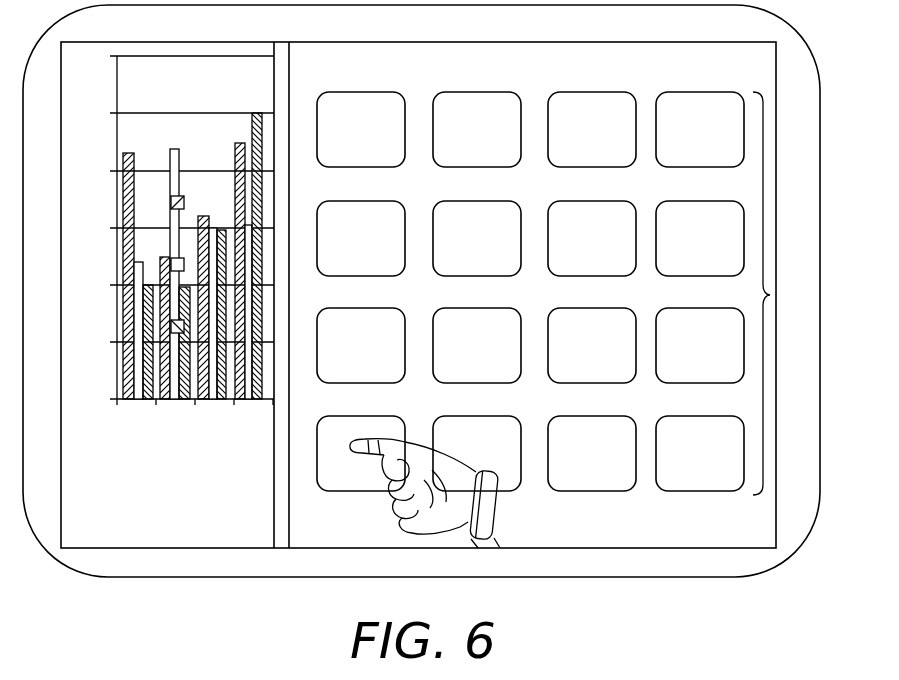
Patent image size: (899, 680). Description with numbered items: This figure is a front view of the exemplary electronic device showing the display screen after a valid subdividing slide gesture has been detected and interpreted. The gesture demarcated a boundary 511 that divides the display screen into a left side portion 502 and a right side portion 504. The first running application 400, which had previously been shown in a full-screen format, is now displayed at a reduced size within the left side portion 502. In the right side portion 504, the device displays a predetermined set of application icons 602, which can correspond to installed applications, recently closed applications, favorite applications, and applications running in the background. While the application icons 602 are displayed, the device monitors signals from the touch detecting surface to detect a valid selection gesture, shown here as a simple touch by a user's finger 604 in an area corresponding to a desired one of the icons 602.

The first running application 400 is at (693, 42).
The left side portion 502 is at (190, 539).
The right side portion 504 is at (326, 539).
The boundary 511 is at (283, 43).
The application icons 602 is at (770, 295).
The user's finger 604 is at (498, 515).